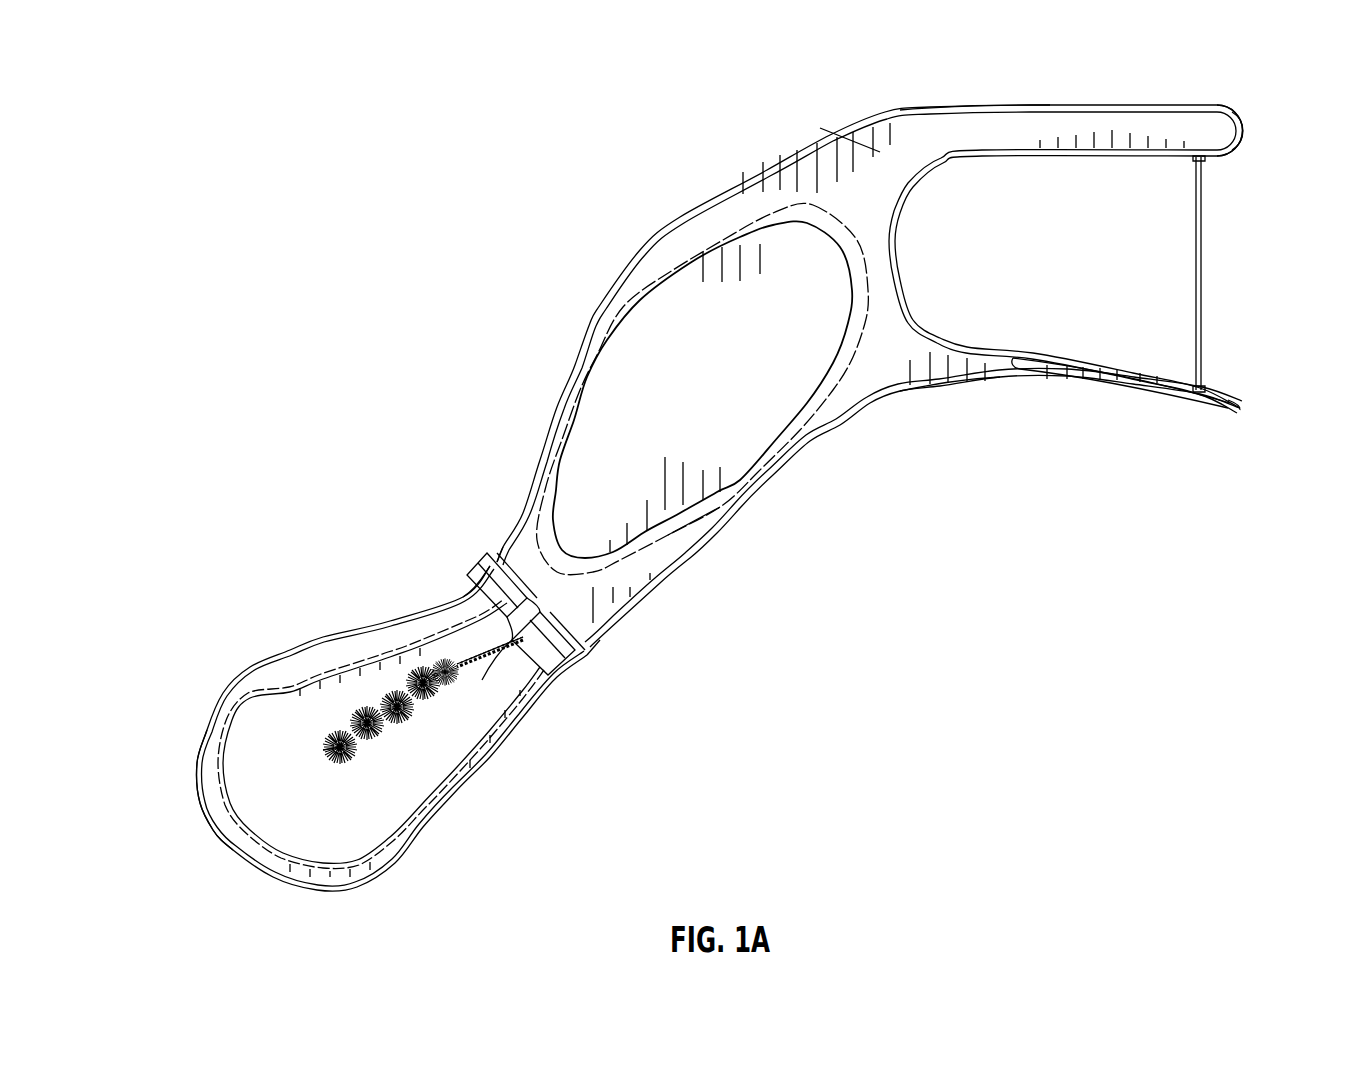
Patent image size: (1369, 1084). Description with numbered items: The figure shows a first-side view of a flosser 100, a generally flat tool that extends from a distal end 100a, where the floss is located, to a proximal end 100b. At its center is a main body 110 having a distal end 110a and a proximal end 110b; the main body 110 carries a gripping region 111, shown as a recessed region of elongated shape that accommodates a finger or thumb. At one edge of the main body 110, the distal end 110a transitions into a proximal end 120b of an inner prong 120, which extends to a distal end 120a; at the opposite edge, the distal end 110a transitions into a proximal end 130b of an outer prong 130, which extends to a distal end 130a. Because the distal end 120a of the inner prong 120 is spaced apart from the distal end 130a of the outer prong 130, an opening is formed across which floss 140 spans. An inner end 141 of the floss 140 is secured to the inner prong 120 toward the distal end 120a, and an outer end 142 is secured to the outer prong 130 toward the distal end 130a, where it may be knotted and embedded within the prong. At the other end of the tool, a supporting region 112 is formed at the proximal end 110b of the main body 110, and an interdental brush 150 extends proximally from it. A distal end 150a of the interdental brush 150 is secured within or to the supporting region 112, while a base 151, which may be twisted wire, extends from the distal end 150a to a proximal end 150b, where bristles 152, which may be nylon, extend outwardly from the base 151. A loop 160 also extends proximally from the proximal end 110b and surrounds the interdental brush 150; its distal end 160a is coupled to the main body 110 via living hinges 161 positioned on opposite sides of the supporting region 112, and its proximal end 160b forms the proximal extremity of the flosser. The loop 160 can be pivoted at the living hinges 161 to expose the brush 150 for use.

The flosser 100 is at (277, 178).
The distal end of flosser 100a is at (1232, 90).
The proximal end of flosser 100b is at (207, 840).
The main body 110 is at (587, 327).
The distal end of main body 110a is at (850, 152).
The proximal end of main body 110b is at (505, 556).
The gripping region 111 is at (733, 402).
The supporting region 112 is at (587, 640).
The inner prong 120 is at (1103, 132).
The distal end of inner prong 120a is at (1240, 133).
The proximal end of inner prong 120b is at (931, 106).
The outer prong 130 is at (1175, 399).
The distal end of outer prong 130a is at (1243, 408).
The proximal end of outer prong 130b is at (940, 390).
The floss 140 is at (1205, 300).
The inner end of floss 141 is at (1207, 157).
The outer end of floss 142 is at (1205, 390).
The interdental brush 150 is at (437, 703).
The distal end of interdental brush 150a is at (440, 607).
The proximal end of interdental brush 150b is at (327, 758).
The base 151 is at (503, 707).
The bristles 152 is at (400, 740).
The loop 160 is at (397, 853).
The distal end of loop 160a is at (428, 590).
The proximal end of loop 160b is at (167, 748).
The living hinges 161 is at (480, 577).